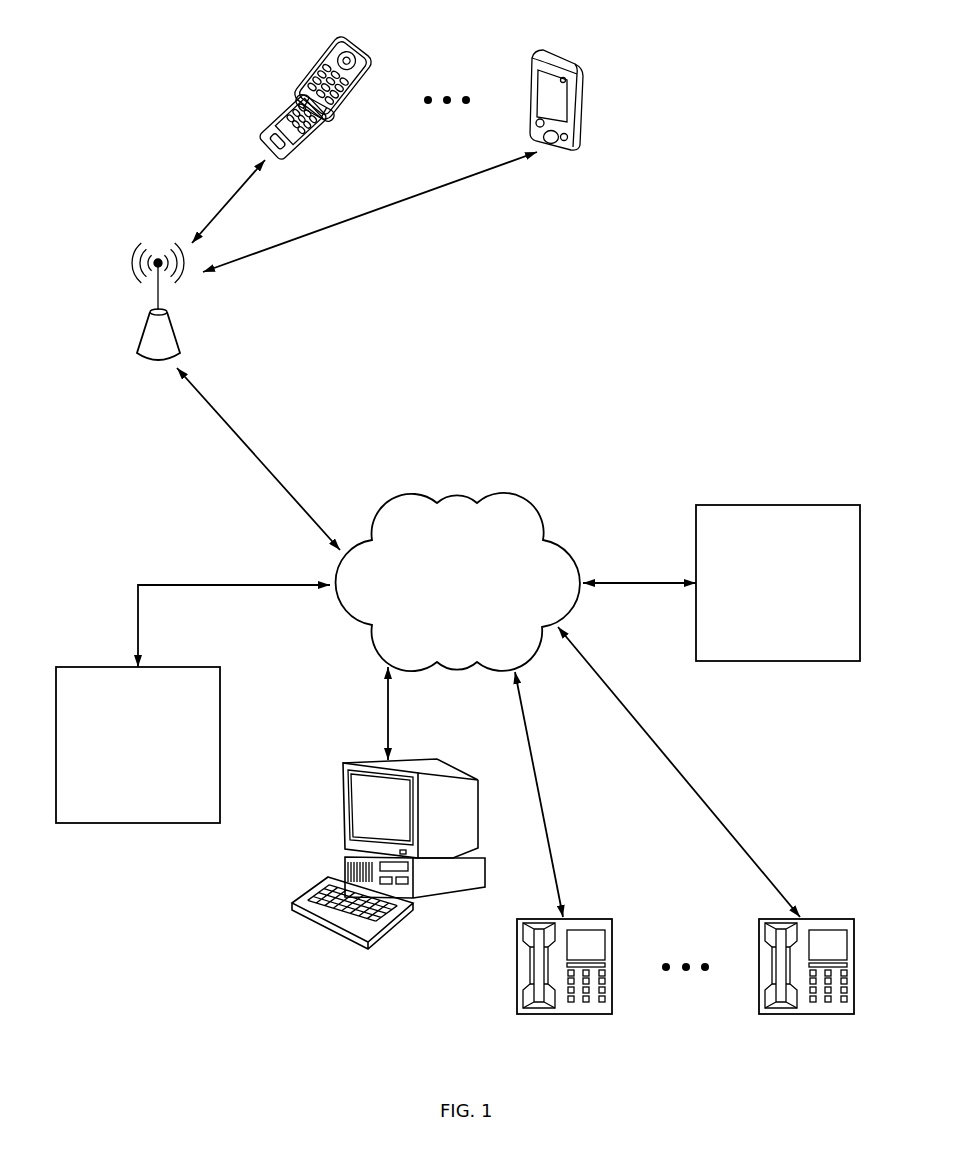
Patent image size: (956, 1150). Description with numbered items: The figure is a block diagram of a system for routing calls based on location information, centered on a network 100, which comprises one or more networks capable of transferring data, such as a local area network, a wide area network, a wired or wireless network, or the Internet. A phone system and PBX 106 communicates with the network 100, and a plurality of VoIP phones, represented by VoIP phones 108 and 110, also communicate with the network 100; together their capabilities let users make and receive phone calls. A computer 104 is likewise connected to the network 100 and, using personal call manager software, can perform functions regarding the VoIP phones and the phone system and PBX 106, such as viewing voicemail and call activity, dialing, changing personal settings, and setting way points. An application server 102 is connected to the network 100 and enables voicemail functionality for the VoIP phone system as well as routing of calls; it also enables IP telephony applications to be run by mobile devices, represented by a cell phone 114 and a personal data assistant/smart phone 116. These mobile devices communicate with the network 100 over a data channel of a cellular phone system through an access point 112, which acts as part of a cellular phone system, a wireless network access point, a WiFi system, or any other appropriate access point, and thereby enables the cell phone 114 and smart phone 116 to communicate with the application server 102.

The network 100 is at (395, 503).
The application server 102 is at (117, 667).
The computer 104 is at (420, 760).
The phone system and PBX 106 is at (757, 505).
The VoIP phone 108 is at (585, 919).
The VoIP phone 110 is at (812, 919).
The access point 112 is at (142, 332).
The cell phone 114 is at (333, 58).
The personal data assistant/smart phone 116 is at (548, 57).